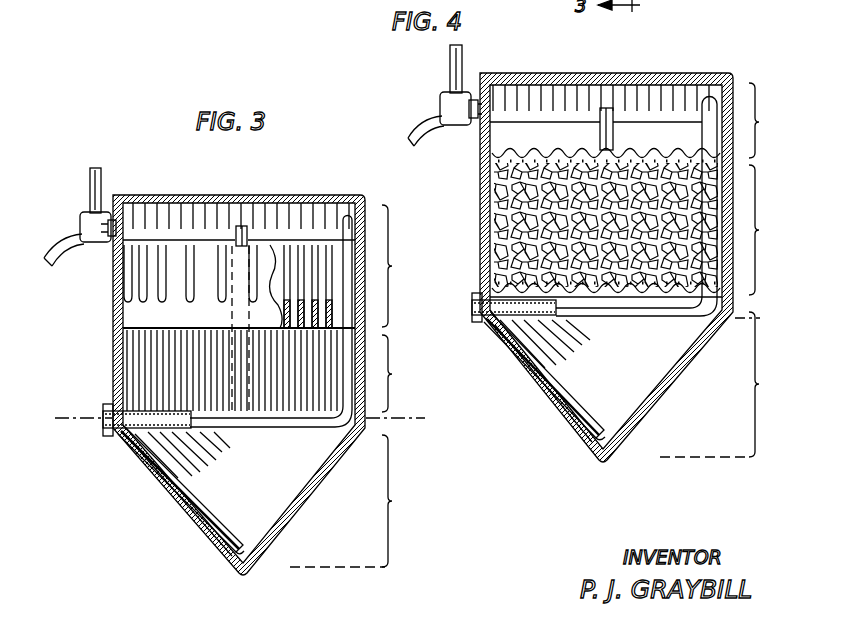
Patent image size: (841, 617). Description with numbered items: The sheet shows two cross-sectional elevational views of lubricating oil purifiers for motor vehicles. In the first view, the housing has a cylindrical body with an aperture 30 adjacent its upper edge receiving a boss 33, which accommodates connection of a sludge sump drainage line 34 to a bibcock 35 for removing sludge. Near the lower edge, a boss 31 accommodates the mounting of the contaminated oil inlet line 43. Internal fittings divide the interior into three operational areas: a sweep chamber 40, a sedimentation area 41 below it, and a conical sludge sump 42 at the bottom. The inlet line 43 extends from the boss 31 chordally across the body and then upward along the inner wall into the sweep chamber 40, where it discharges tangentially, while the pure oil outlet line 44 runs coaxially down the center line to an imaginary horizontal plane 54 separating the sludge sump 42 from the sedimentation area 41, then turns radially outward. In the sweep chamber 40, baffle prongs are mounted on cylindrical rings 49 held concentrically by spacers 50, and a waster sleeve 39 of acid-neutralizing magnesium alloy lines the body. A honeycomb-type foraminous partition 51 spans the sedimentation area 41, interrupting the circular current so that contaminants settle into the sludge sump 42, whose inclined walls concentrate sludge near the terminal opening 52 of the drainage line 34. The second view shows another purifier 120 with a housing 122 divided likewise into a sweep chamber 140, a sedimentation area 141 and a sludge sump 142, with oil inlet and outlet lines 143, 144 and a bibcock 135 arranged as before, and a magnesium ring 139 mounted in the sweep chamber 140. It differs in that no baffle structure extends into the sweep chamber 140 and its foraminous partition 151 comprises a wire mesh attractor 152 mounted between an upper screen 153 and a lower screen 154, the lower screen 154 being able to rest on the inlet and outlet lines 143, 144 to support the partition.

In FIG. 3, the aperture 30 is at (215, 385).
In FIG. 3, the boss 31 is at (107, 430).
In FIG. 3, the boss 33 is at (113, 212).
In FIG. 3, the sludge sump drainage line 34 is at (205, 507).
In FIG. 3, the bibcock 35 is at (87, 220).
In FIG. 3, the waster sleeve 39 is at (240, 212).
In FIG. 3, the sweep chamber 40 is at (400, 266).
In FIG. 3, the sedimentation area 41 is at (400, 373).
In FIG. 3, the sludge sump 42 is at (400, 501).
In FIG. 3, the contaminated oil inlet line 43 is at (345, 215).
In FIG. 3, the pure oil outlet line 44 is at (247, 232).
In FIG. 3, the cylindrical ring 49 is at (142, 313).
In FIG. 3, the spacer 50 is at (270, 314).
In FIG. 3, the foraminous partition 51 is at (150, 372).
In FIG. 3, the terminal opening 52 is at (240, 548).
In FIG. 3, the horizontal plane 54 is at (395, 420).
In FIG. 4, the purifier 120 is at (542, 425).
In FIG. 4, the housing 122 is at (516, 360).
In FIG. 4, the bibcock 135 is at (446, 108).
In FIG. 4, the magnesium ring 139 is at (627, 83).
In FIG. 4, the sweep chamber 140 is at (774, 120).
In FIG. 4, the sedimentation area 141 is at (774, 230).
In FIG. 4, the sludge sump 142 is at (730, 384).
In FIG. 4, the oil inlet line 143 is at (706, 80).
In FIG. 4, the oil outlet line 144 is at (614, 112).
In FIG. 4, the foraminous partition 151 is at (490, 260).
In FIG. 4, the wire mesh attractor 152 is at (522, 214).
In FIG. 4, the upper screen 153 is at (500, 136).
In FIG. 4, the lower screen 154 is at (640, 300).